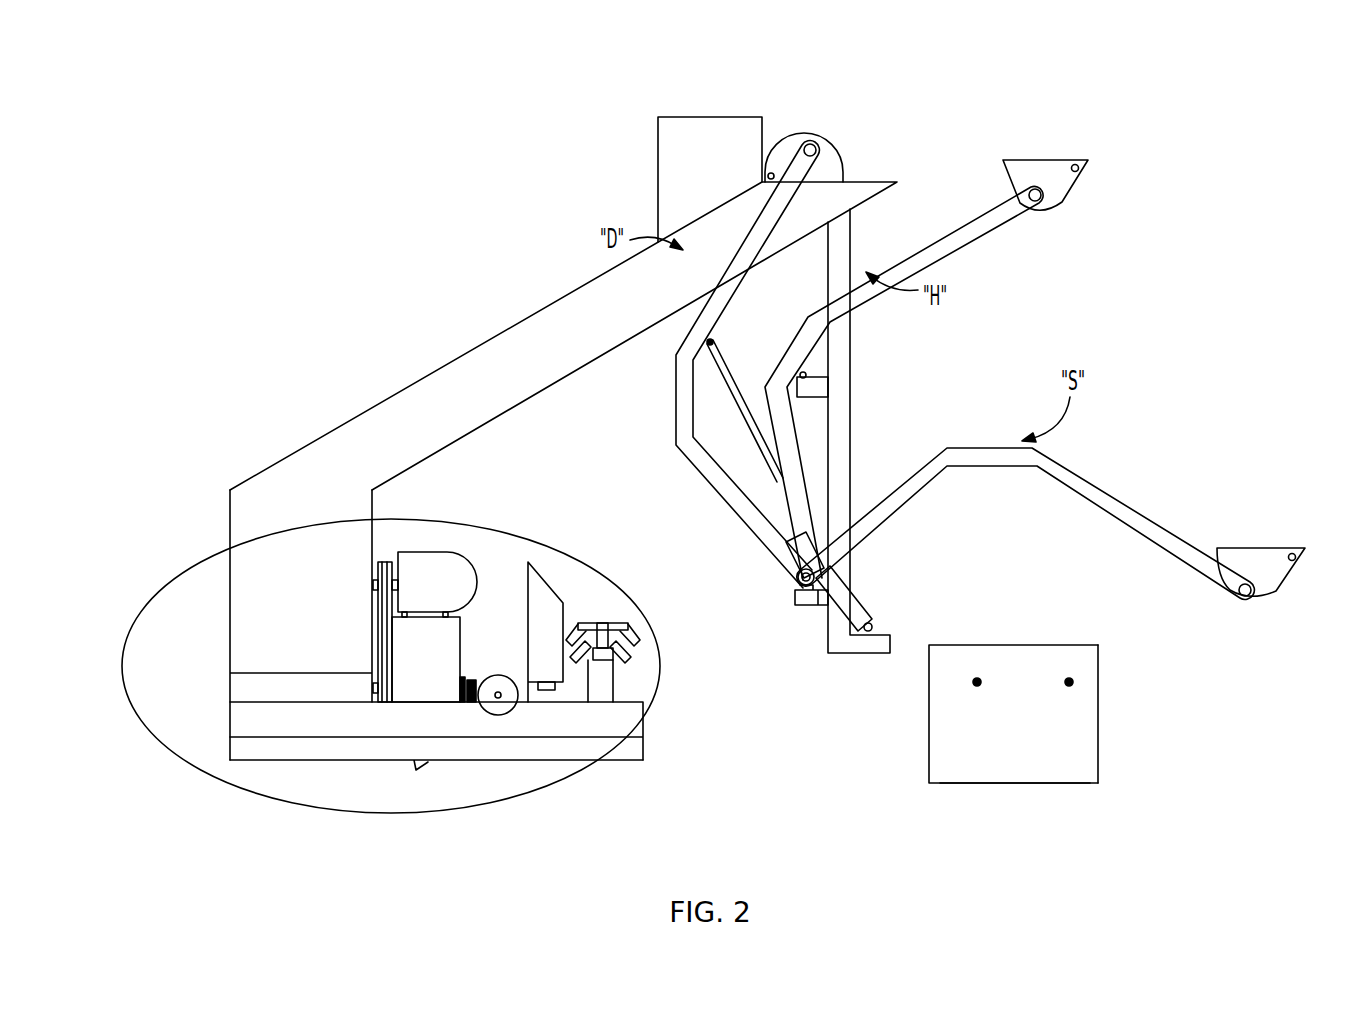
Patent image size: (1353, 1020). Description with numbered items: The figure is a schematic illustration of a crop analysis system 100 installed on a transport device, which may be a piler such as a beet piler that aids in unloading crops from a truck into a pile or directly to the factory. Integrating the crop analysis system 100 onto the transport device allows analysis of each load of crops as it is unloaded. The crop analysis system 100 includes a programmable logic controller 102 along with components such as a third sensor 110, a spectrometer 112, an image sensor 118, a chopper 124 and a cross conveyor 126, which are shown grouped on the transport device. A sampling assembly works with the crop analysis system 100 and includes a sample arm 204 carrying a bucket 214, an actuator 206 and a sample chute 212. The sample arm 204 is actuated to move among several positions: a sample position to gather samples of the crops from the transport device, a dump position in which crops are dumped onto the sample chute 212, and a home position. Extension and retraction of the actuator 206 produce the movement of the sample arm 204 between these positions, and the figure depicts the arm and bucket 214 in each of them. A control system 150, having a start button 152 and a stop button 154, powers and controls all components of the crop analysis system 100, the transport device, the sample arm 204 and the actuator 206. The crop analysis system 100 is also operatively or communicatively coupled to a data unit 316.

The crop analysis system 100 is at (306, 520).
The programmable logic controller 102 is at (1008, 749).
The third sensor 110 is at (471, 665).
The spectrometer 112 is at (556, 603).
The image sensor 118 is at (622, 666).
The chopper 124 is at (194, 683).
The cross conveyor 126 is at (220, 735).
The control system 150 is at (1041, 717).
The start button 152 is at (942, 684).
The stop button 154 is at (1071, 652).
The sample arm 204 is at (740, 214).
The actuator 206 is at (875, 594).
The sample chute 212 is at (479, 371).
The bucket 214 is at (1084, 142).
The data unit 316 is at (1082, 759).